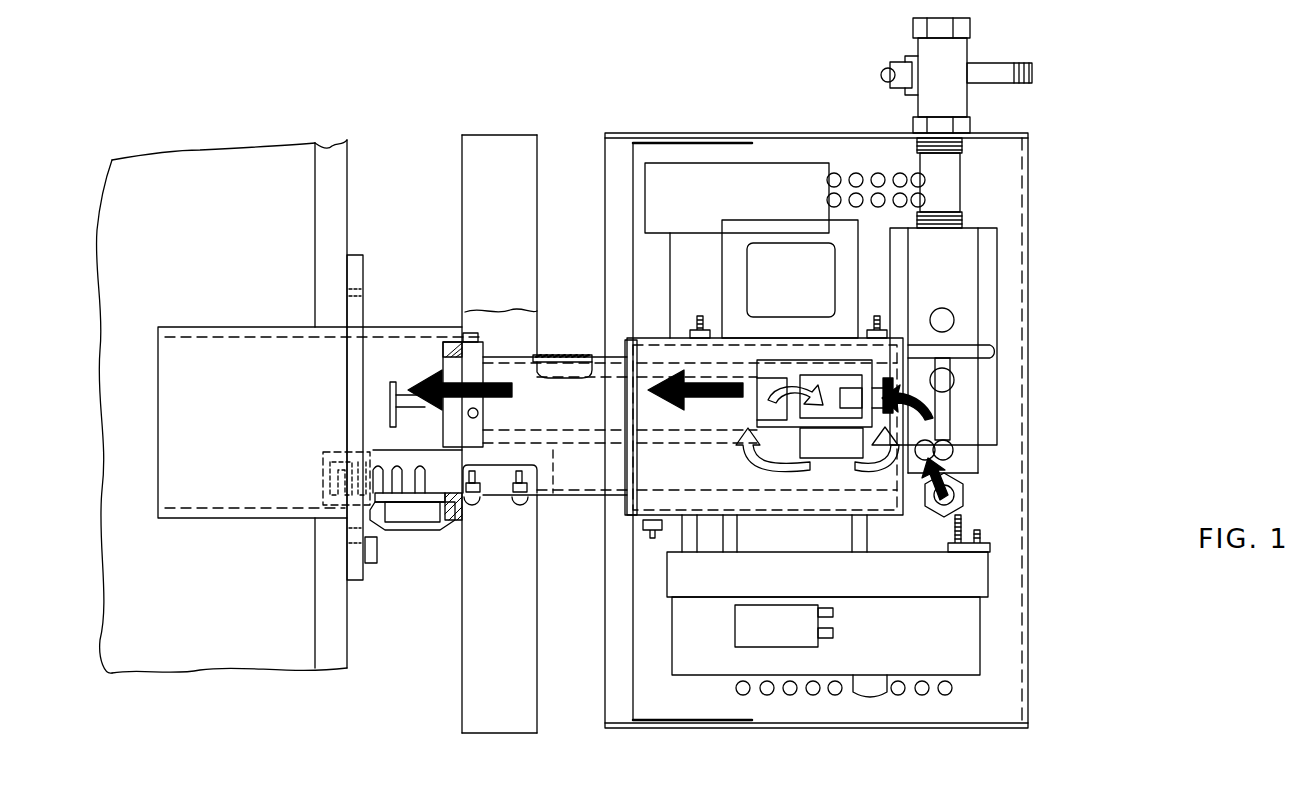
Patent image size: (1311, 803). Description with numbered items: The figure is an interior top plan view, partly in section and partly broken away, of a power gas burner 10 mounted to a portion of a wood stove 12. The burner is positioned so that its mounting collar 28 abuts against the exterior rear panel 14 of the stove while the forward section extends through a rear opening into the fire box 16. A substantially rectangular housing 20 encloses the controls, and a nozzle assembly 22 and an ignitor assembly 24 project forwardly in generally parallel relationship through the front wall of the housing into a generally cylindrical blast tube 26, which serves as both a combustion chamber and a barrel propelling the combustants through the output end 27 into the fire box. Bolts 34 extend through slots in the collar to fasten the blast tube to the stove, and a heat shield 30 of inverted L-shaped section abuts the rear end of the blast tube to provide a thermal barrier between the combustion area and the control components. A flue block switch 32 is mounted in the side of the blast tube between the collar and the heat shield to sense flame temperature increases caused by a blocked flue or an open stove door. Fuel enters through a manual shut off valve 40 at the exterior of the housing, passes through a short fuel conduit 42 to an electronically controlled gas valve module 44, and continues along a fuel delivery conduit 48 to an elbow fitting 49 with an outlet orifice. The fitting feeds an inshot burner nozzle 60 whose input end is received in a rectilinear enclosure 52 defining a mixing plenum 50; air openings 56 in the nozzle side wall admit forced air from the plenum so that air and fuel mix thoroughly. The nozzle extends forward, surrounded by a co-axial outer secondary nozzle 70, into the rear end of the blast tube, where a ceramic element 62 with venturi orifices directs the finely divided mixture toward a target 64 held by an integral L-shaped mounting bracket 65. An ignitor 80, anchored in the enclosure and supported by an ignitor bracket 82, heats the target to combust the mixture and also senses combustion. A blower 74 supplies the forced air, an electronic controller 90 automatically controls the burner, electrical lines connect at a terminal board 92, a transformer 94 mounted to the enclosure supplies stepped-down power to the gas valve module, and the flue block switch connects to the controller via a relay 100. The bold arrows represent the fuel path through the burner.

The power gas burner 10 is at (751, 112).
The wood stove 12 is at (205, 125).
The rear panel 14 is at (343, 192).
The fire box 16 is at (205, 214).
The housing 20 is at (912, 730).
The nozzle assembly 22 is at (554, 333).
The ignitor assembly 24 is at (553, 515).
The blast tube 26 is at (275, 345).
The output end 27 is at (155, 428).
The mounting collar 28 is at (365, 274).
The heat shield 30 is at (515, 148).
The flue block switch 32 is at (403, 535).
The bolts 34 is at (380, 563).
The manual shut off valve 40 is at (960, 58).
The fuel conduit 42 is at (950, 172).
The gas valve module 44 is at (958, 265).
The fuel delivery conduit 48 is at (975, 487).
The elbow fitting 49 is at (950, 385).
The mixing plenum 50 is at (890, 470).
The enclosure 52 is at (835, 500).
The air openings 56 is at (858, 415).
The inshot burner nozzle 60 is at (810, 370).
The ceramic element 62 is at (445, 355).
The target 64 is at (392, 400).
The mounting bracket 65 is at (428, 404).
The outer secondary nozzle 70 is at (553, 360).
The blower 74 is at (785, 250).
The ignitor 80 is at (325, 470).
The ignitor bracket 82 is at (508, 496).
The electronic controller 90 is at (960, 632).
The terminal board 92 is at (740, 582).
The transformer 94 is at (790, 279).
The relay 100 is at (798, 635).